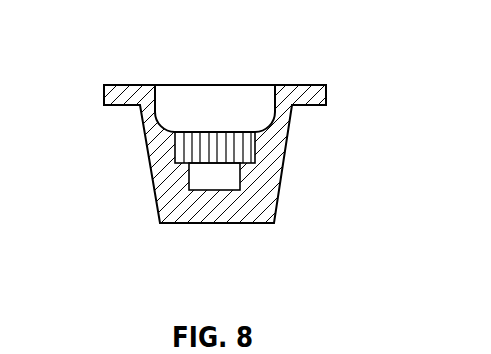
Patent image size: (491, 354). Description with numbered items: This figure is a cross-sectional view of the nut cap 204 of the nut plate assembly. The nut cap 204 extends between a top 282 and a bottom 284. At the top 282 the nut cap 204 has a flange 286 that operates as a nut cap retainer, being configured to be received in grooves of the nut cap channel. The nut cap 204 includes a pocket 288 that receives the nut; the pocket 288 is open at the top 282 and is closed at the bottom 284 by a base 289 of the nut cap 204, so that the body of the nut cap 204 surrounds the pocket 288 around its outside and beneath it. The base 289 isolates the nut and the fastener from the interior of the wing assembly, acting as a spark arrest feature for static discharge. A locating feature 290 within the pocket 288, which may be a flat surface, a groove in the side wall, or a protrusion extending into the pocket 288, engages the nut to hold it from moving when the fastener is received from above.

The nut cap 204 is at (265, 70).
The top 282 is at (148, 84).
The bottom 284 is at (175, 226).
The flange 286 is at (103, 95).
The pocket 288 is at (208, 110).
The base 289 is at (232, 226).
The locating feature 290 is at (236, 150).